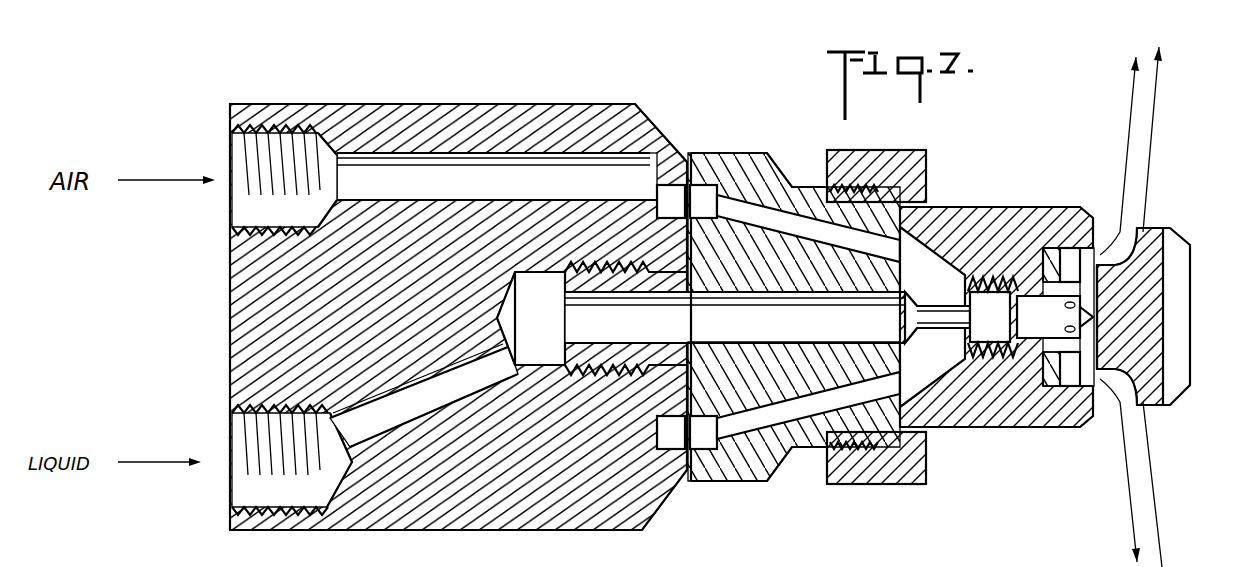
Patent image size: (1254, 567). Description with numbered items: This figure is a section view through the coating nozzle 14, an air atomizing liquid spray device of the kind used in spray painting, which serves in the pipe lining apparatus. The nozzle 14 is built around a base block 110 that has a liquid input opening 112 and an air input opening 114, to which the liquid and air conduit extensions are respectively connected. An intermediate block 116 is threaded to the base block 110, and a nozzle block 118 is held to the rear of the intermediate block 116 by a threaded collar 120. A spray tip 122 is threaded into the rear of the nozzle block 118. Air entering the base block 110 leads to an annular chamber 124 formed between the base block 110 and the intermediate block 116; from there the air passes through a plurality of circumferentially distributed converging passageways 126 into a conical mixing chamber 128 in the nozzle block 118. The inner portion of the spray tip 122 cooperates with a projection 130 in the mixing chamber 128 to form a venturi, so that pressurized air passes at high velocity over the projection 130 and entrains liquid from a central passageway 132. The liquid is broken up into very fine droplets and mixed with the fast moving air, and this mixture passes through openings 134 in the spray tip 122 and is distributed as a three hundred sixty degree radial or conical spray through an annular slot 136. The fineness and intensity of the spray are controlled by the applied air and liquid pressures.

The coating nozzle 14 is at (705, 307).
The base block 110 is at (433, 104).
The liquid input opening 112 is at (234, 498).
The air input opening 114 is at (240, 143).
The intermediate block 116 is at (735, 152).
The nozzle block 118 is at (1027, 427).
The threaded collar 120 is at (883, 484).
The spray tip 122 is at (1172, 246).
The annular chamber 124 is at (667, 186).
The converging passageways 126 is at (775, 198).
The conical mixing chamber 128 is at (935, 245).
The projection 130 is at (950, 340).
The central passageway 132 is at (942, 296).
The openings 134 is at (1098, 227).
The annular slot 136 is at (1125, 232).